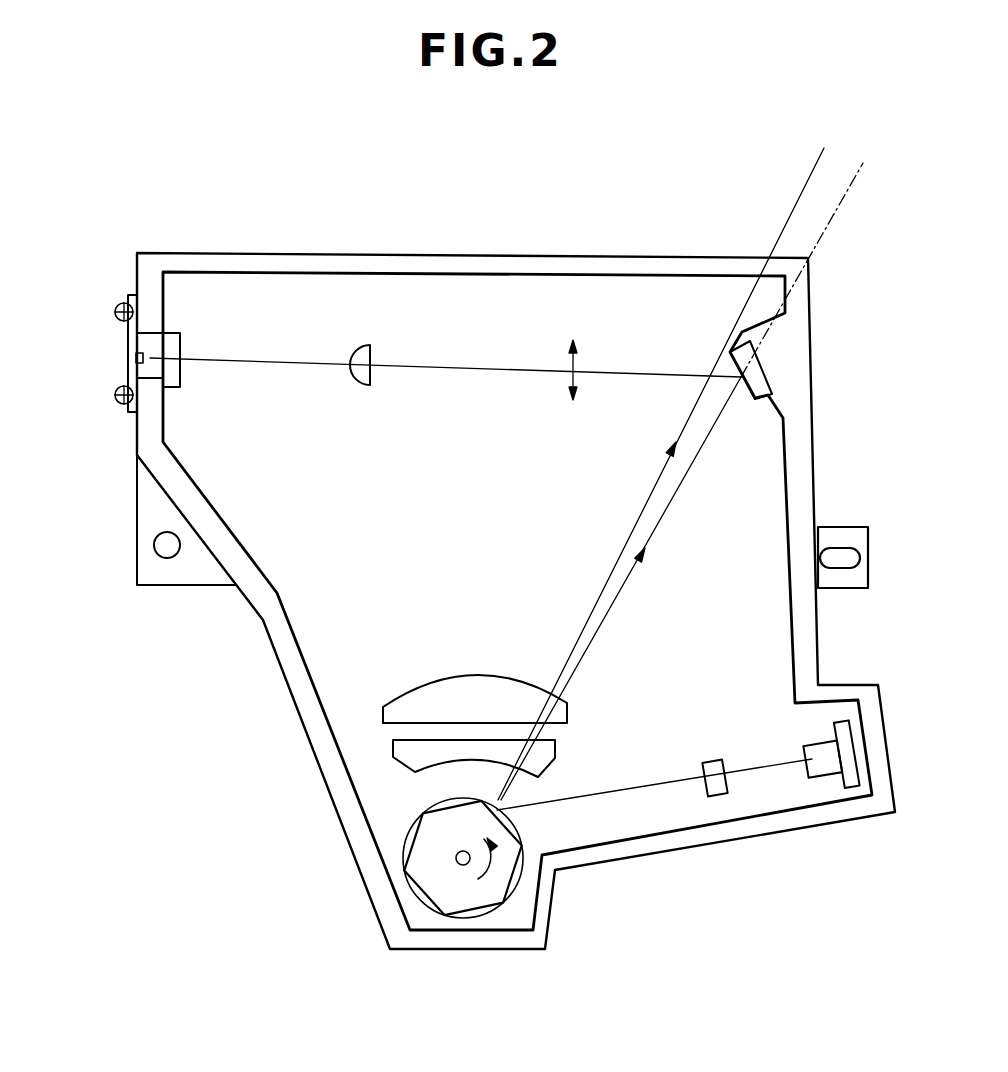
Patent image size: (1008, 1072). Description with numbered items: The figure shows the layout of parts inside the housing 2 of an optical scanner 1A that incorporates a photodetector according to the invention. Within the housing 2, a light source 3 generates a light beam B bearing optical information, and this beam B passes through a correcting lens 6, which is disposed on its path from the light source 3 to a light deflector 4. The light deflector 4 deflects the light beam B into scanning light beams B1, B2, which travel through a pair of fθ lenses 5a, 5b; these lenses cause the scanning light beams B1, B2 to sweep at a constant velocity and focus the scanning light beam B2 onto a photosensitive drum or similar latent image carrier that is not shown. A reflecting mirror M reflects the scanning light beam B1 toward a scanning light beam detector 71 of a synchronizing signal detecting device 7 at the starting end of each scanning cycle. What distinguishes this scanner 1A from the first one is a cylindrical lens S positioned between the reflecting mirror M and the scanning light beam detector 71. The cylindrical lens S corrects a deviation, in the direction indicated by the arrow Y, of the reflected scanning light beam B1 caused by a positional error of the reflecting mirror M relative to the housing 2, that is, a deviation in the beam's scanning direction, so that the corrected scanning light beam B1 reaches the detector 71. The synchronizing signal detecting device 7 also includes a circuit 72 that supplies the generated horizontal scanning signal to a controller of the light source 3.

The optical scanner 1A is at (614, 244).
The housing 2 is at (330, 772).
The light source 3 is at (835, 766).
The light deflector 4 is at (482, 893).
The fθ lens 5a is at (556, 745).
The fθ lens 5b is at (568, 712).
The correcting lens 6 is at (718, 796).
The synchronizing signal detecting device 7 is at (125, 326).
The scanning light beam detector 71 is at (136, 358).
The circuit 72 is at (126, 374).
The cylindrical lens S is at (356, 344).
The reflecting mirror M is at (760, 404).
The arrow Y is at (572, 369).
The light beam B is at (632, 797).
The scanning light beam B1 is at (445, 370).
The scanning light beam B2 is at (630, 536).